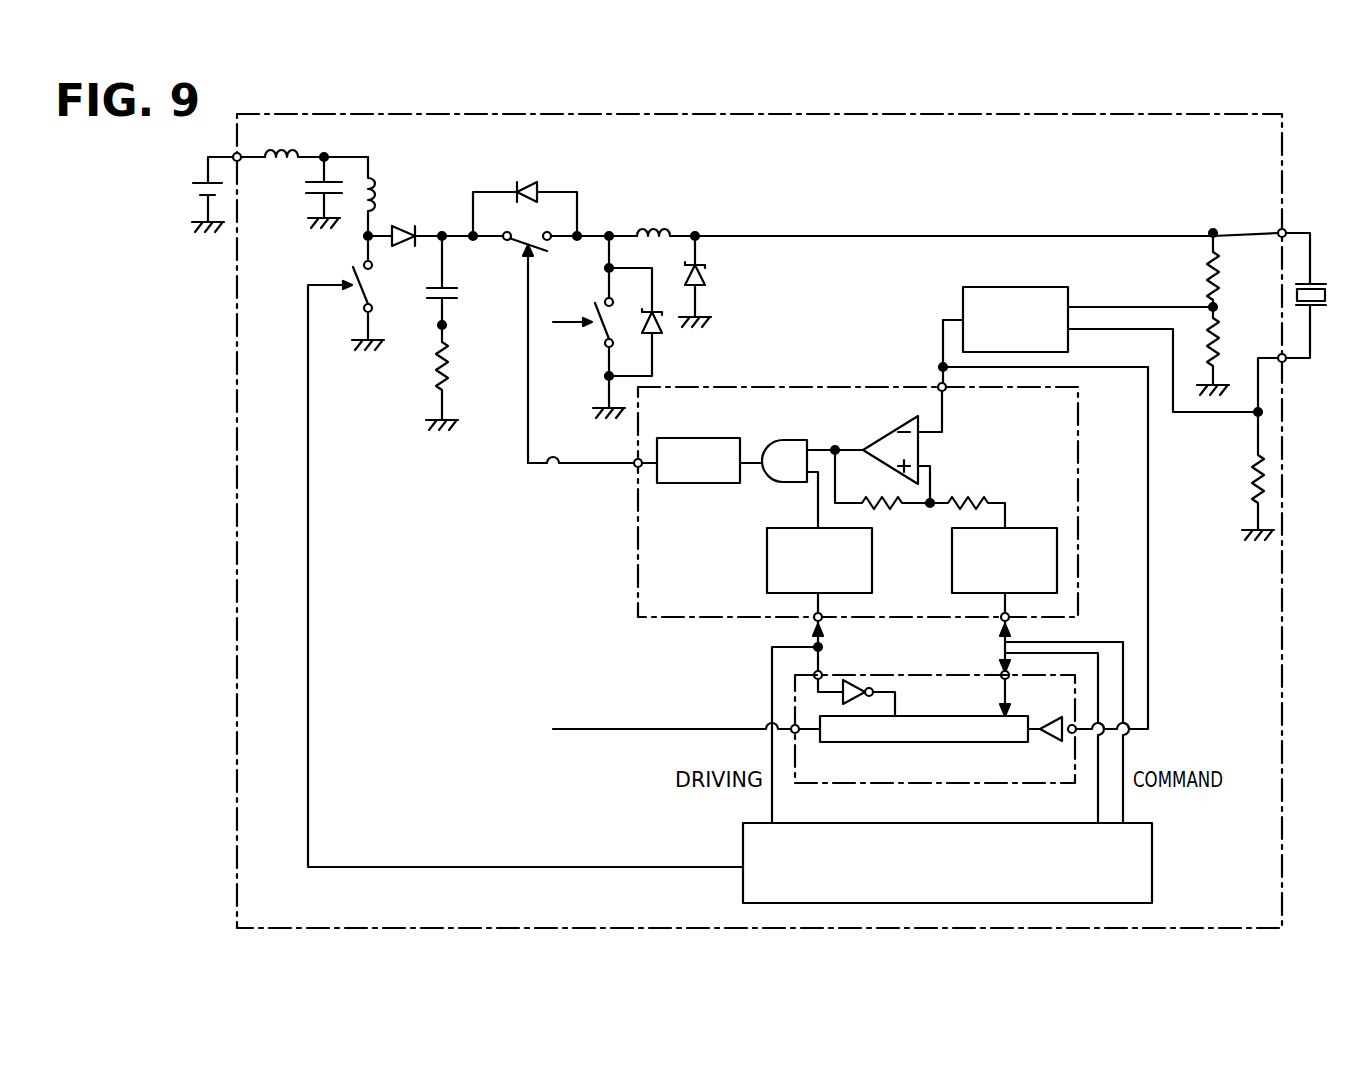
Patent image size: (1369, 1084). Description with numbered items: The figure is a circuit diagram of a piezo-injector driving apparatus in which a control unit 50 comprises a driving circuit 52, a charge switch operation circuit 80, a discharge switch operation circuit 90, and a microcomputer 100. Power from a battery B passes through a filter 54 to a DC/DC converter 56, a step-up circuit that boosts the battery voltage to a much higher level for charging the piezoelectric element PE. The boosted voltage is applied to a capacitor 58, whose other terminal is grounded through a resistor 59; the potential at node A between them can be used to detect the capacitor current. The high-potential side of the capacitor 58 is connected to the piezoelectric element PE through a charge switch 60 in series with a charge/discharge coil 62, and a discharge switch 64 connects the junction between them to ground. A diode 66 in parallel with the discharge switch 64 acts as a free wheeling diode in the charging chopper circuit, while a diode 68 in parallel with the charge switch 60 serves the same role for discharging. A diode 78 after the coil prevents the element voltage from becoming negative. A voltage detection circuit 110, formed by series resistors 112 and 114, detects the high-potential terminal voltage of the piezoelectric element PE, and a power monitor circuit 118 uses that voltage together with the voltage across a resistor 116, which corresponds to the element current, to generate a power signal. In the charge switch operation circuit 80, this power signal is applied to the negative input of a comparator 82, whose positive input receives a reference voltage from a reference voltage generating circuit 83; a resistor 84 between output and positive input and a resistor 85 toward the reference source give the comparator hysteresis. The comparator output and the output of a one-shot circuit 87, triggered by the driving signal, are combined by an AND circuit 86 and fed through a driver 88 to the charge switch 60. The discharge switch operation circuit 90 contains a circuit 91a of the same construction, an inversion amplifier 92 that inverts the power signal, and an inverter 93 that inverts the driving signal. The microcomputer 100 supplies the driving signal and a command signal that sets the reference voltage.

The control unit 50 is at (1283, 797).
The driving circuit 52 is at (863, 204).
The filter 54 is at (374, 144).
The DC/DC converter 56 is at (464, 174).
The capacitor 58 is at (444, 286).
The resistor 59 is at (448, 352).
The charge switch 60 is at (509, 241).
The charge/discharge coil 62 is at (665, 217).
The discharge switch 64 is at (602, 322).
The diode 66 is at (660, 322).
The diode 68 is at (521, 182).
The diode 78 is at (704, 272).
The charge switch operation circuit 80 is at (835, 386).
The comparator 82 is at (878, 434).
The reference voltage generating circuit 83 is at (952, 563).
The resistor 84 is at (864, 502).
The resistor 85 is at (986, 500).
The AND circuit 86 is at (776, 485).
The one-shot circuit 87 is at (767, 563).
The driver 88 is at (690, 486).
The discharge switch operation circuit 90 is at (1037, 786).
The circuit 91a is at (950, 702).
The inversion amplifier 92 is at (1050, 722).
The inverter 93 is at (857, 680).
The microcomputer 100 is at (1152, 857).
The voltage detection circuit 110 is at (1270, 204).
The resistor 112 is at (1207, 268).
The resistor 114 is at (1222, 340).
The resistor 116 is at (1252, 490).
The power monitor circuit 118 is at (1036, 287).
The node A is at (447, 325).
The battery B is at (206, 181).
The piezoelectric element PE is at (1320, 283).